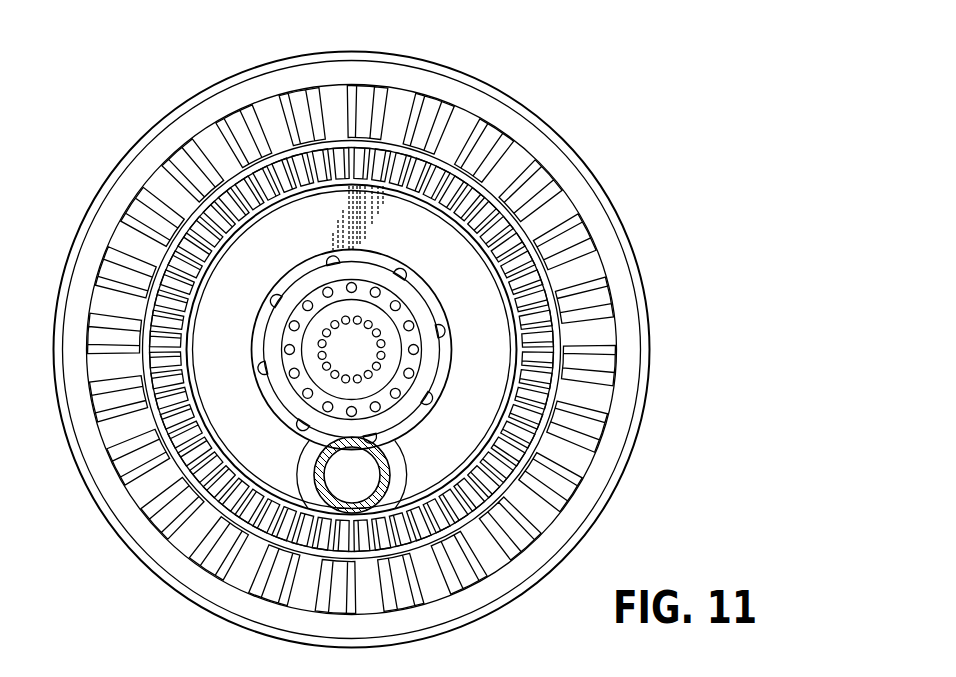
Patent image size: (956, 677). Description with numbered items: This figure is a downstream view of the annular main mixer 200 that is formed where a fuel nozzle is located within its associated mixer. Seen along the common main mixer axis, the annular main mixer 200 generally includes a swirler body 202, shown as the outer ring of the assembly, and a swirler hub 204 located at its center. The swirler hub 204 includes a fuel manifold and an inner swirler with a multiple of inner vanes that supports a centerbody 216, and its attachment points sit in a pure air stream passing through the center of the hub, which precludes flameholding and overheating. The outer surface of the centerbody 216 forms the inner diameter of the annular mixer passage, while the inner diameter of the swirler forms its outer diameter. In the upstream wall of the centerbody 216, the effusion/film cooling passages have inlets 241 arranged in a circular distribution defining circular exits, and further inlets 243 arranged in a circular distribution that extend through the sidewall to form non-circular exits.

The annular main mixer 200 is at (683, 263).
The swirler body 202 is at (622, 165).
The swirler hub 204 is at (418, 230).
The centerbody 216 is at (242, 262).
The inlets 241 is at (380, 331).
The inlets 243 is at (399, 400).